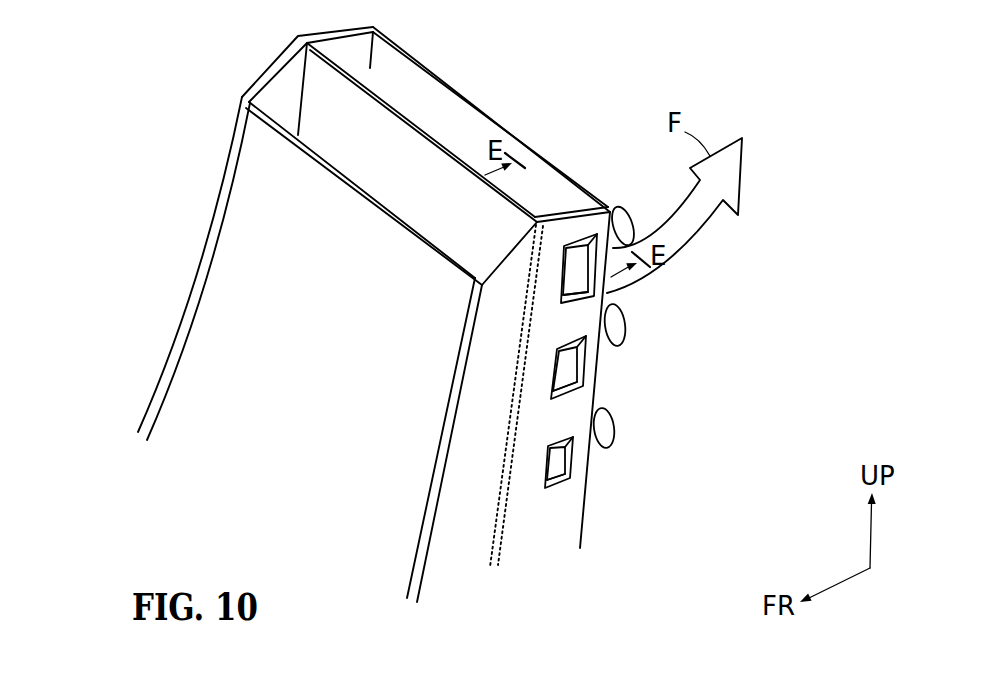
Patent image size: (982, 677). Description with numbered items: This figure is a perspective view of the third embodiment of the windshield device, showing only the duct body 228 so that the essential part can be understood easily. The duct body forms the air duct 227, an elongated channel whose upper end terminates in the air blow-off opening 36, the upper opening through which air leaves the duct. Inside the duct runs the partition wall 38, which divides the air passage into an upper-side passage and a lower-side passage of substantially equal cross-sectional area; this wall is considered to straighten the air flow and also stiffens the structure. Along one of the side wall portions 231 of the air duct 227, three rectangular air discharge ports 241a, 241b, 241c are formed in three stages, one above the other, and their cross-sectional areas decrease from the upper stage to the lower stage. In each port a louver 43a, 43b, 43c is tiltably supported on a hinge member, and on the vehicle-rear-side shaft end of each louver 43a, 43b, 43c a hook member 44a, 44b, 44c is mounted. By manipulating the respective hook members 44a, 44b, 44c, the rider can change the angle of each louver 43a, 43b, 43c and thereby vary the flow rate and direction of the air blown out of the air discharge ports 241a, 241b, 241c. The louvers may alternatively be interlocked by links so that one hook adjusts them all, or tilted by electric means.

The duct body 228 is at (150, 198).
The air duct 227 is at (414, 304).
The air blow-off opening 36 is at (465, 138).
The partition wall 38 is at (408, 113).
The side wall portions 231 is at (563, 525).
The louver 43a is at (580, 267).
The louver 43b is at (563, 369).
The louver 43c is at (553, 460).
The air discharge port 241a is at (580, 295).
The air discharge port 241b is at (573, 388).
The air discharge port 241c is at (560, 477).
The hook member 44a is at (630, 220).
The hook member 44b is at (622, 320).
The hook member 44c is at (607, 430).